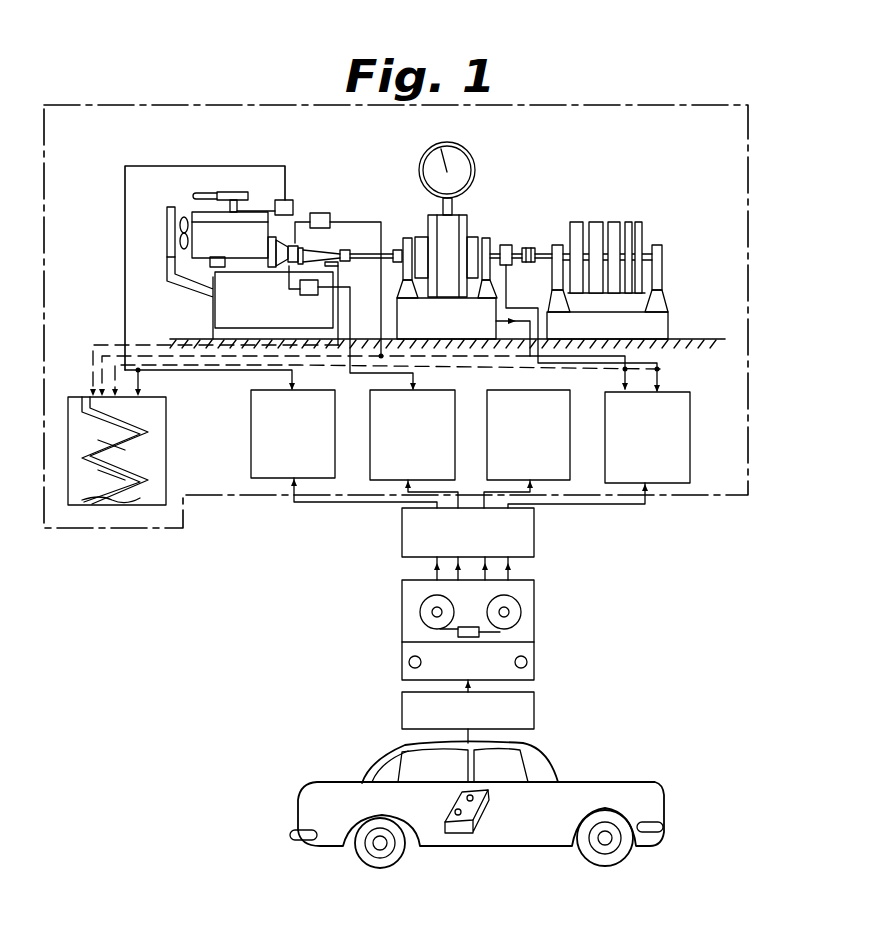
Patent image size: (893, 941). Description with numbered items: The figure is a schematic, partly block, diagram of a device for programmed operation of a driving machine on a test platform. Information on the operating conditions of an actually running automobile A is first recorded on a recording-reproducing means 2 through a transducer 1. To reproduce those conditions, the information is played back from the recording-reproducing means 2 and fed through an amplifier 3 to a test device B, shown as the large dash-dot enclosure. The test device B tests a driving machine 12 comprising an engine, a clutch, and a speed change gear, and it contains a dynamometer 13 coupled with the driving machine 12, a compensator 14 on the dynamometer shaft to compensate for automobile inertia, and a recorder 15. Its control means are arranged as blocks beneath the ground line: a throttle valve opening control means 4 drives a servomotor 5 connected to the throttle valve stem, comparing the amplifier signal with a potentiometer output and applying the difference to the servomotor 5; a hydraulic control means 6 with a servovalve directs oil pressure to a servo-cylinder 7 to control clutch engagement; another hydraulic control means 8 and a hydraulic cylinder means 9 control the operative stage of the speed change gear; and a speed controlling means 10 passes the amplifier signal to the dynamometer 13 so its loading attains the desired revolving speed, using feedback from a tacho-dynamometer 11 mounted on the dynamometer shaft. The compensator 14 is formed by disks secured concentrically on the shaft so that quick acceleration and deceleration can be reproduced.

The transducer 1 is at (534, 708).
The recording-reproducing means 2 is at (534, 606).
The amplifier 3 is at (534, 533).
The throttle valve opening control means 4 is at (344, 449).
The servomotor 5 is at (288, 200).
The hydraulic control means 6 is at (414, 449).
The servo-cylinder 7 is at (300, 289).
The hydraulic control means 8 is at (527, 449).
The hydraulic cylinder means 9 is at (320, 213).
The speed controlling means 10 is at (599, 450).
The tacho-dynamometer 11 is at (506, 245).
The driving machine 12 is at (207, 243).
The dynamometer 13 is at (468, 152).
The compensator 14 is at (642, 230).
The recorder 15 is at (158, 447).
The automobile A is at (608, 786).
The test device B is at (140, 102).